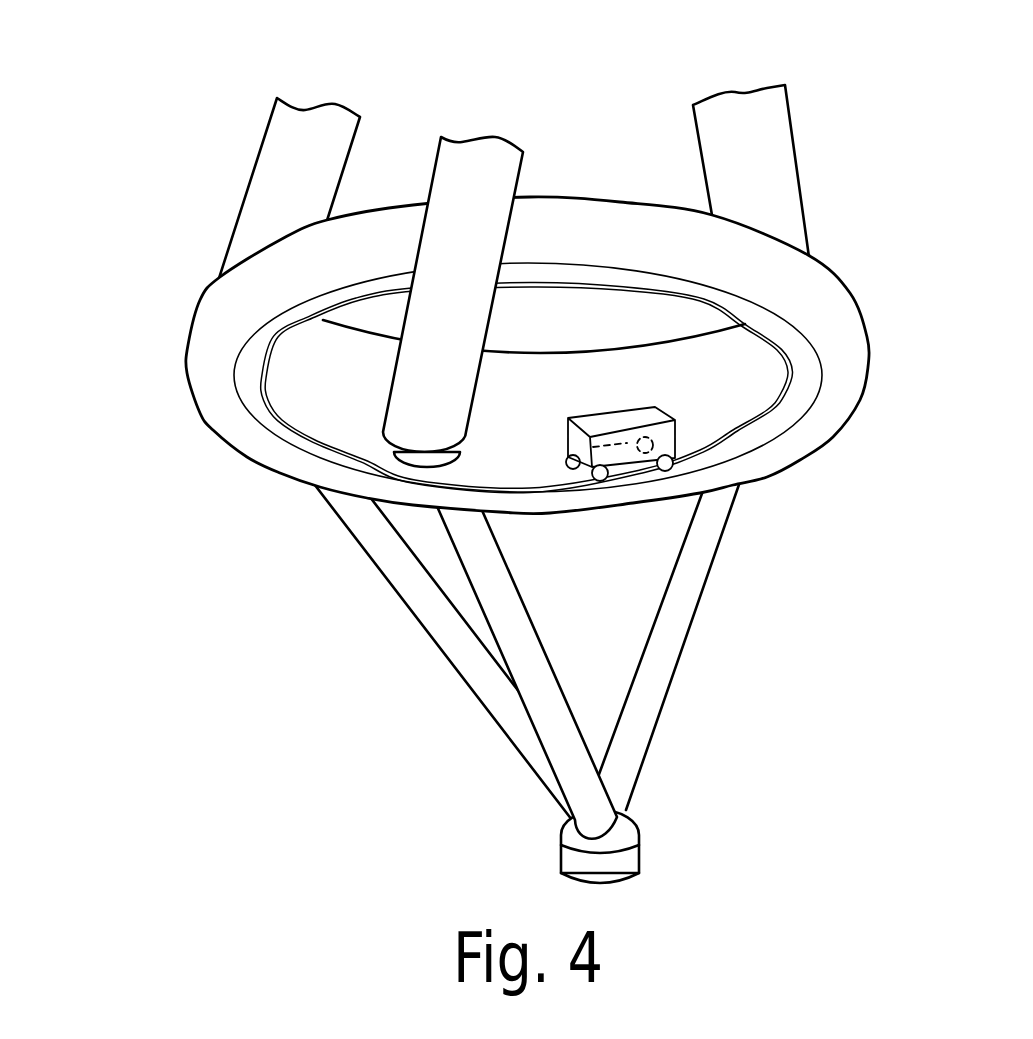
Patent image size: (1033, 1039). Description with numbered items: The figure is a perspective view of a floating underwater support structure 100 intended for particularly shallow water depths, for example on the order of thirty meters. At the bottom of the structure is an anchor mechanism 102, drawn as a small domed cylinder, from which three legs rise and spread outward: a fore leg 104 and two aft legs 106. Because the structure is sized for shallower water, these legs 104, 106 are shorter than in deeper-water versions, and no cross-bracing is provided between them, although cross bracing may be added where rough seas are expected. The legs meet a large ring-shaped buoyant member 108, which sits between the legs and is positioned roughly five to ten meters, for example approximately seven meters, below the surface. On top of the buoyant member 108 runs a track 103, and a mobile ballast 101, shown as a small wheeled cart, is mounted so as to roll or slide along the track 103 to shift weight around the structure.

The floating underwater support structure 100 is at (463, 441).
The mobile ballast 101 is at (634, 420).
The anchor mechanism 102 is at (633, 857).
The track 103 is at (485, 282).
The fore leg 104 is at (695, 580).
The aft legs 106 is at (506, 666).
The buoyant member 108 is at (233, 413).